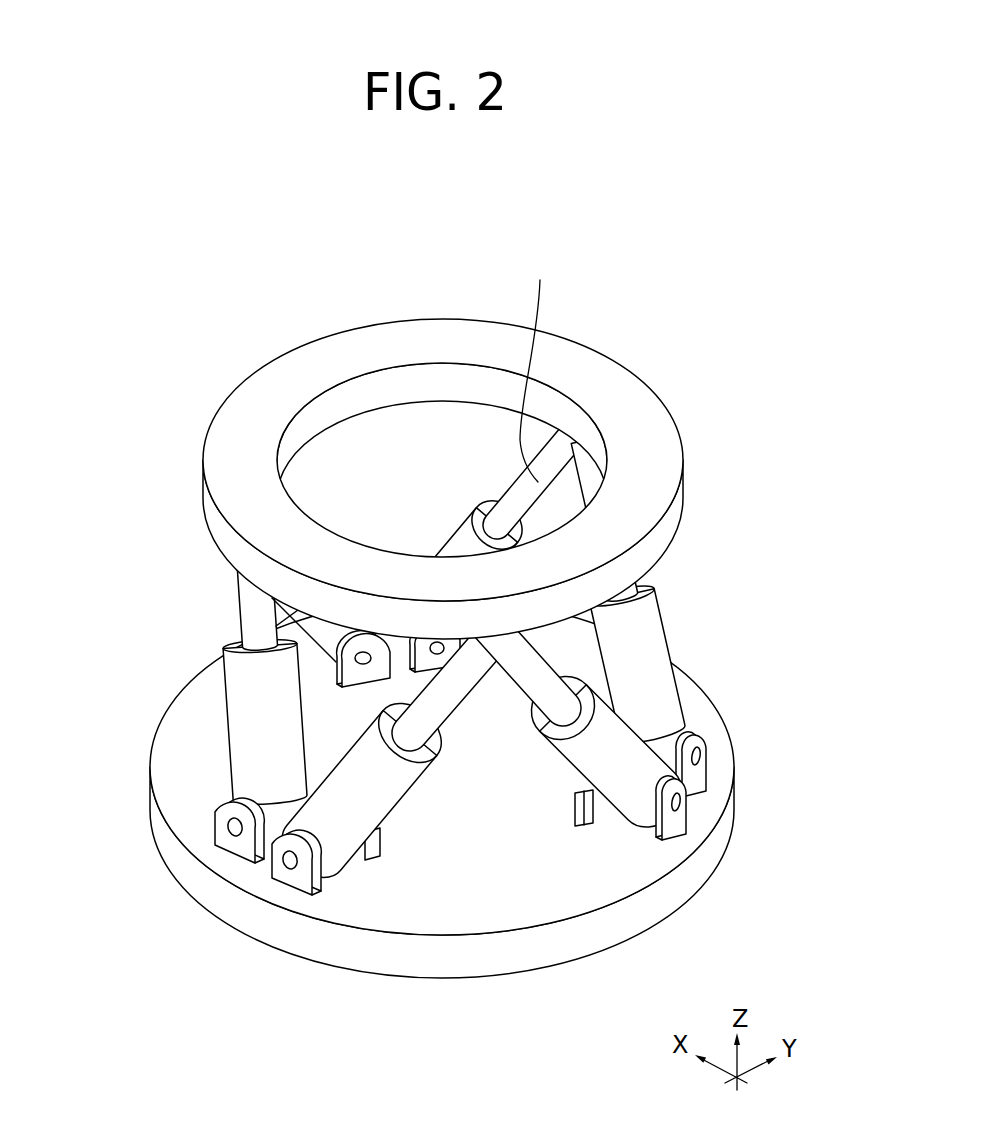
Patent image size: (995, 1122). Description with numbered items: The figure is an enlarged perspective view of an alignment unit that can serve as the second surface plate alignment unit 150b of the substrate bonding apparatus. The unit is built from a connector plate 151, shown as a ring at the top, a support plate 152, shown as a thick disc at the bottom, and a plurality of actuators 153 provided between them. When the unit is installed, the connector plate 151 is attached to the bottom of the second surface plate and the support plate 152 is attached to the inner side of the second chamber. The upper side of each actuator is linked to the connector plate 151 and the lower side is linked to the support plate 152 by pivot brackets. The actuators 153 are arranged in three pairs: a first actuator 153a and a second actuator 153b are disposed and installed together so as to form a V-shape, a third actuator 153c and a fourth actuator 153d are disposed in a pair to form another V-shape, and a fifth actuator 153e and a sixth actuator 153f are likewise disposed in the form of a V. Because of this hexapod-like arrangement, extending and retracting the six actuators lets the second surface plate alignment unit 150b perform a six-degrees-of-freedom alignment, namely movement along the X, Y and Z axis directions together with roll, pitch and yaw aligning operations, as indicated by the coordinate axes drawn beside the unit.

The second surface plate alignment unit 150b is at (441, 244).
The connector plate 151 is at (310, 370).
The support plate 152 is at (305, 937).
The actuators 153 is at (441, 646).
The first actuator 153a is at (238, 690).
The second actuator 153b is at (395, 787).
The third actuator 153c is at (633, 792).
The fourth actuator 153d is at (653, 703).
The fifth actuator 153e is at (538, 482).
The sixth actuator 153f is at (318, 630).